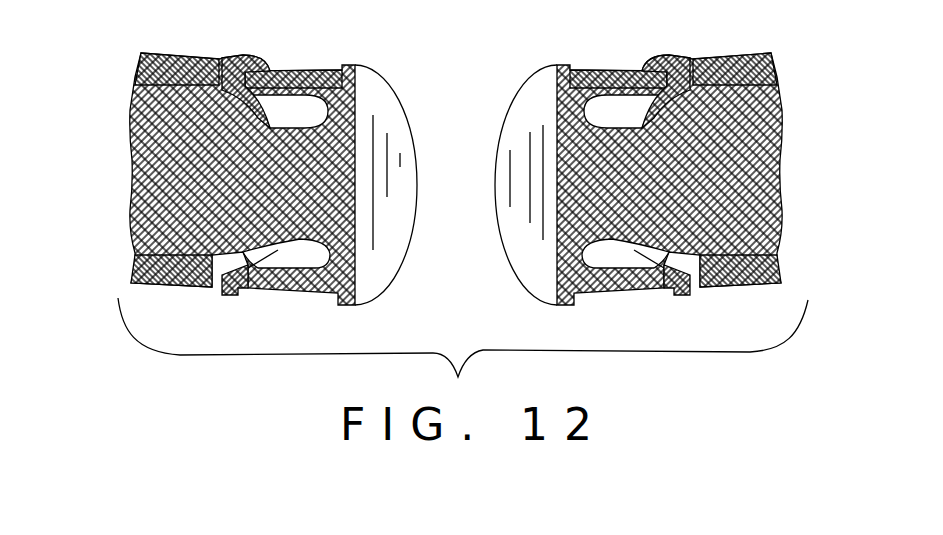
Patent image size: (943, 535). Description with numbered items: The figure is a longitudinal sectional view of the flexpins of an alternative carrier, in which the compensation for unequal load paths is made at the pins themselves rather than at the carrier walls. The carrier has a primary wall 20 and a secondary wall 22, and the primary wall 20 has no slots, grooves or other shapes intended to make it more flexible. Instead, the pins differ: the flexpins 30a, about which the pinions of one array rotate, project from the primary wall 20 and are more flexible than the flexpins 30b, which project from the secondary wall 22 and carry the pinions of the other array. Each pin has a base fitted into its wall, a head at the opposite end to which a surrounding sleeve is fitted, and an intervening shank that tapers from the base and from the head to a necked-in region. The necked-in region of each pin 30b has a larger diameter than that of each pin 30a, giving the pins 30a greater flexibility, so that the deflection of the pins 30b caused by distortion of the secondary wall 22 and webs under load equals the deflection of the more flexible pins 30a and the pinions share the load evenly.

The primary wall 20 is at (773, 263).
The secondary wall 22 is at (138, 262).
The flexpin 30a is at (537, 95).
The flexpin 30b is at (373, 88).